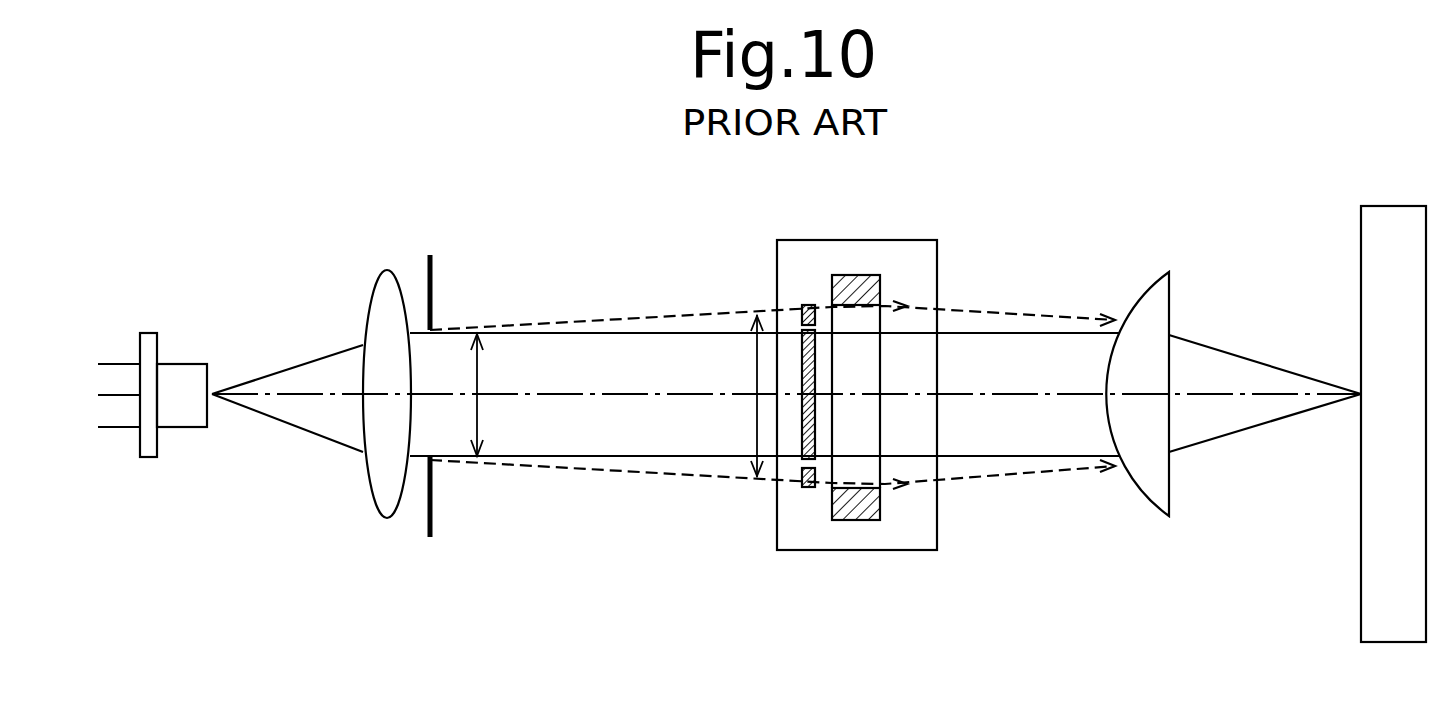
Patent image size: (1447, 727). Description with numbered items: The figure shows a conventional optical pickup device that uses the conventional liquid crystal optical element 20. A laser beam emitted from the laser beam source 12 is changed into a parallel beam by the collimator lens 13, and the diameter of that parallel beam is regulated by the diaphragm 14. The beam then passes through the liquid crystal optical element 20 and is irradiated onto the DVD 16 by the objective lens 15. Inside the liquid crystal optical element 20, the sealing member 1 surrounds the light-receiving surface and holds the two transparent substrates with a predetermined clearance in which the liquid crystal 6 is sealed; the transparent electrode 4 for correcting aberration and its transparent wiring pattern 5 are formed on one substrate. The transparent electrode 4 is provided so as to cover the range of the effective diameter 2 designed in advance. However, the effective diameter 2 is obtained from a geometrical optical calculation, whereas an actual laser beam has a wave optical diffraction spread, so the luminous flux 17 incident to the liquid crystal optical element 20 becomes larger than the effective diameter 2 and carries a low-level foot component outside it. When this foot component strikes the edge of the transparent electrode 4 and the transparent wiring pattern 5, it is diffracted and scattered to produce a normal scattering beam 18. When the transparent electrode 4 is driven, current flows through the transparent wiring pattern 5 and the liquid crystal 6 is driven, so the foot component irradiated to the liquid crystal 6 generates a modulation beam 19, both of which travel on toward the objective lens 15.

The laser beam source 12 is at (178, 422).
The collimator lens 13 is at (382, 495).
The diaphragm 14 is at (435, 278).
The effective diameter 2 is at (473, 413).
The luminous flux 17 is at (753, 427).
The liquid crystal optical element 20 is at (868, 240).
The sealing member 1 is at (845, 277).
The liquid crystal 6 is at (872, 362).
The transparent electrode for correcting aberration 4 is at (803, 427).
The transparent wiring pattern 5 is at (802, 317).
The normal scattering beam 18 is at (966, 311).
The modulation beam 19 is at (999, 479).
The objective lens 15 is at (1161, 293).
The DVD 16 is at (1386, 206).